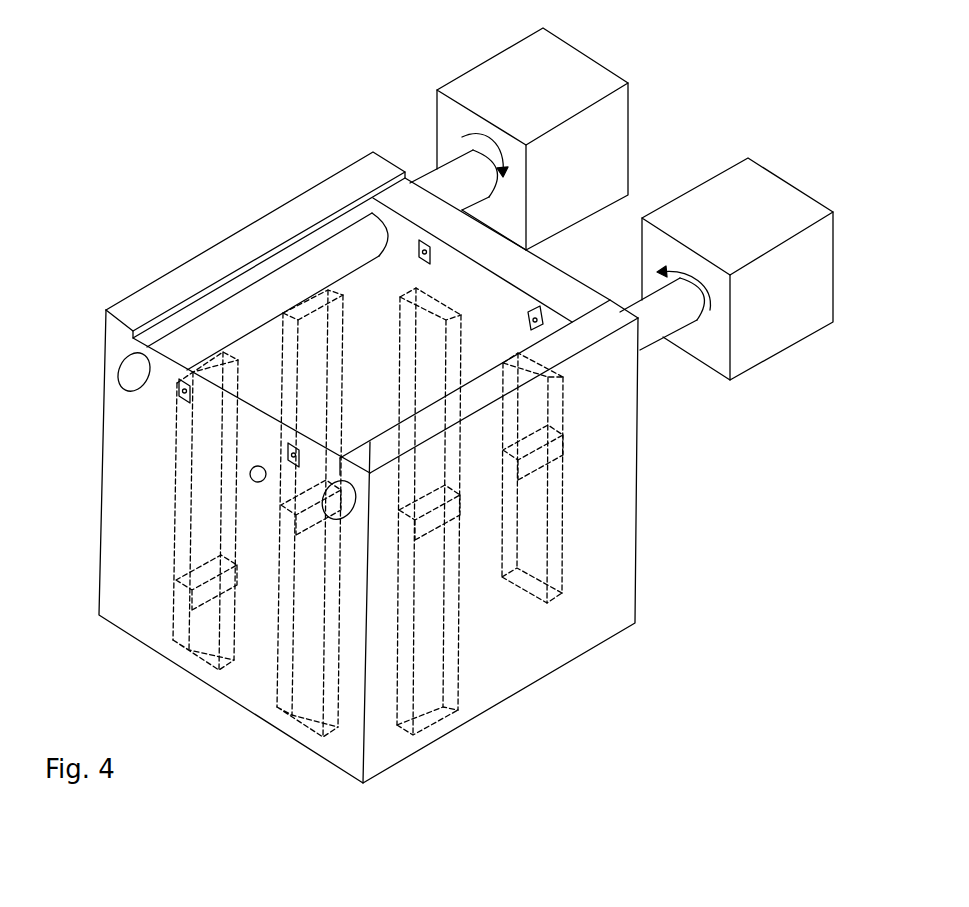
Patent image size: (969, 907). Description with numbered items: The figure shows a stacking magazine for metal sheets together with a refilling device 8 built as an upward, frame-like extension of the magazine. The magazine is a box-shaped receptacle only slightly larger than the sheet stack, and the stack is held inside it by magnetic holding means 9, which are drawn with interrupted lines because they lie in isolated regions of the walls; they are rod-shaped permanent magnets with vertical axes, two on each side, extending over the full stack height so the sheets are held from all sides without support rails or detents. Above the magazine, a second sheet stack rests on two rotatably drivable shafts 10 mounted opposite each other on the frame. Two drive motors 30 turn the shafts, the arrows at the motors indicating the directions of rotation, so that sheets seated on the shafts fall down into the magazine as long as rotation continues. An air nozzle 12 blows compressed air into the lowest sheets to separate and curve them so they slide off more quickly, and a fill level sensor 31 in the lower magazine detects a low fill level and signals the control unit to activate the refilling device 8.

The refilling device 8 is at (115, 408).
The magnetic holding means 9 is at (318, 357).
The rotatably drivable shafts 10 is at (130, 370).
The air nozzle 12 is at (417, 237).
The drive motors 30 is at (528, 95).
The fill level sensor 31 is at (255, 478).